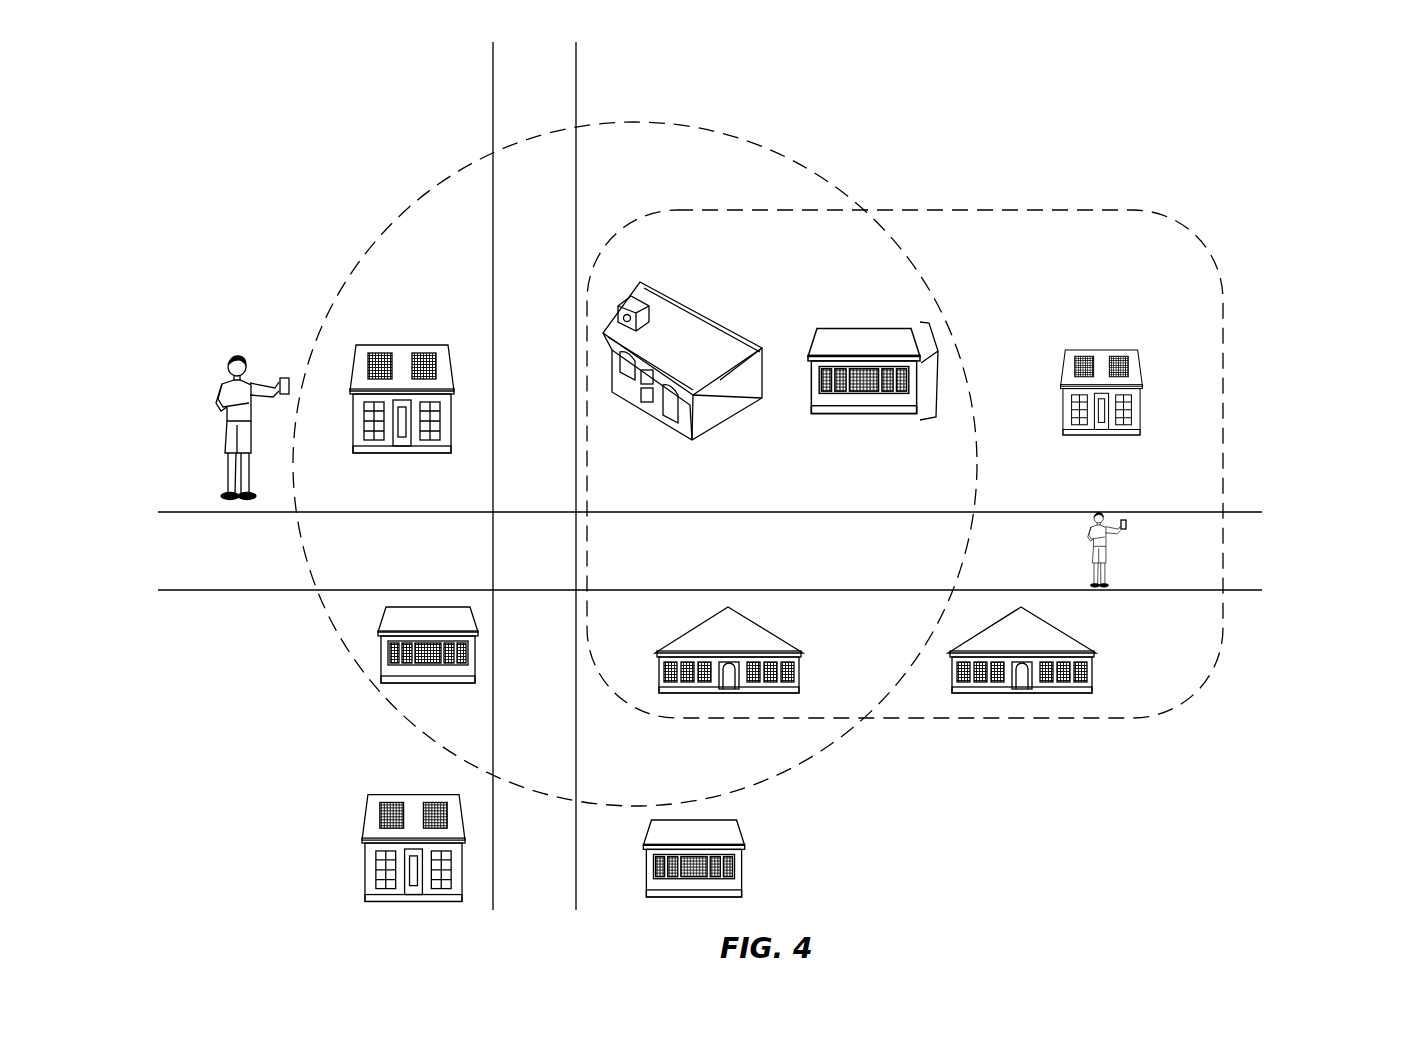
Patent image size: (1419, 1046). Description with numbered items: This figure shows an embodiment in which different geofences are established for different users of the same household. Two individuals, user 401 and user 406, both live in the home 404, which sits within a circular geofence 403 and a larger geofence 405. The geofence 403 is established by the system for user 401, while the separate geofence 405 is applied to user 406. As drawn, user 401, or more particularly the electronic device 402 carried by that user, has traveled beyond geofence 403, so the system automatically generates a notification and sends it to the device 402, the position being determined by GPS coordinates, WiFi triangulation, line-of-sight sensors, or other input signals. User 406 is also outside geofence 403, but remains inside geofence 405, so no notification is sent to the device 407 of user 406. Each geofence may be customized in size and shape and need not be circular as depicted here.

The user 401 is at (236, 358).
The electronic device 402 is at (282, 378).
The geofence 403 is at (756, 144).
The home 404 is at (705, 318).
The geofence 405 is at (1060, 208).
The user 406 is at (1090, 538).
The device 407 is at (1124, 529).